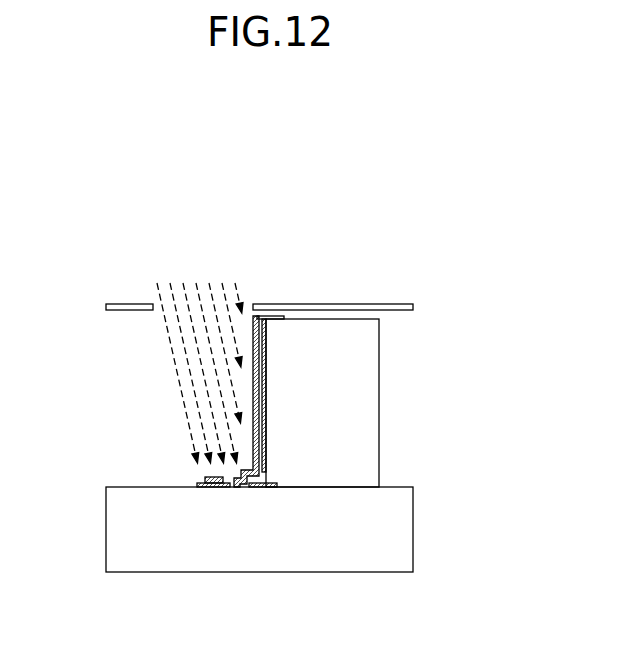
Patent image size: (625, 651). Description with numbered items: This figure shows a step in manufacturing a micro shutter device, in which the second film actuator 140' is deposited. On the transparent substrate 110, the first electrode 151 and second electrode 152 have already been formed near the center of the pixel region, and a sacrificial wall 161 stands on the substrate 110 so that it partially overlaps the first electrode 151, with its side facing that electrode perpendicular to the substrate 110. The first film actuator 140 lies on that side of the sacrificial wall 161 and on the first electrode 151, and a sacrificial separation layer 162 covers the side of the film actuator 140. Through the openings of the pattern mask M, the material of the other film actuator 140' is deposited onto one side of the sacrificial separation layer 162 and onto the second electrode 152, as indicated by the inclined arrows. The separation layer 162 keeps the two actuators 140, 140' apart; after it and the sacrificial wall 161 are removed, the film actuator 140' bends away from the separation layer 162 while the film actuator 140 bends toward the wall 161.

The pattern mask M is at (342, 305).
The transparent substrate 110 is at (403, 533).
The film actuator 140 is at (347, 401).
The film actuator 140' is at (170, 373).
The first electrode 151 is at (262, 487).
The second electrode 152 is at (207, 487).
The sacrificial wall 161 is at (365, 378).
The sacrificial separation layer 162 is at (263, 353).